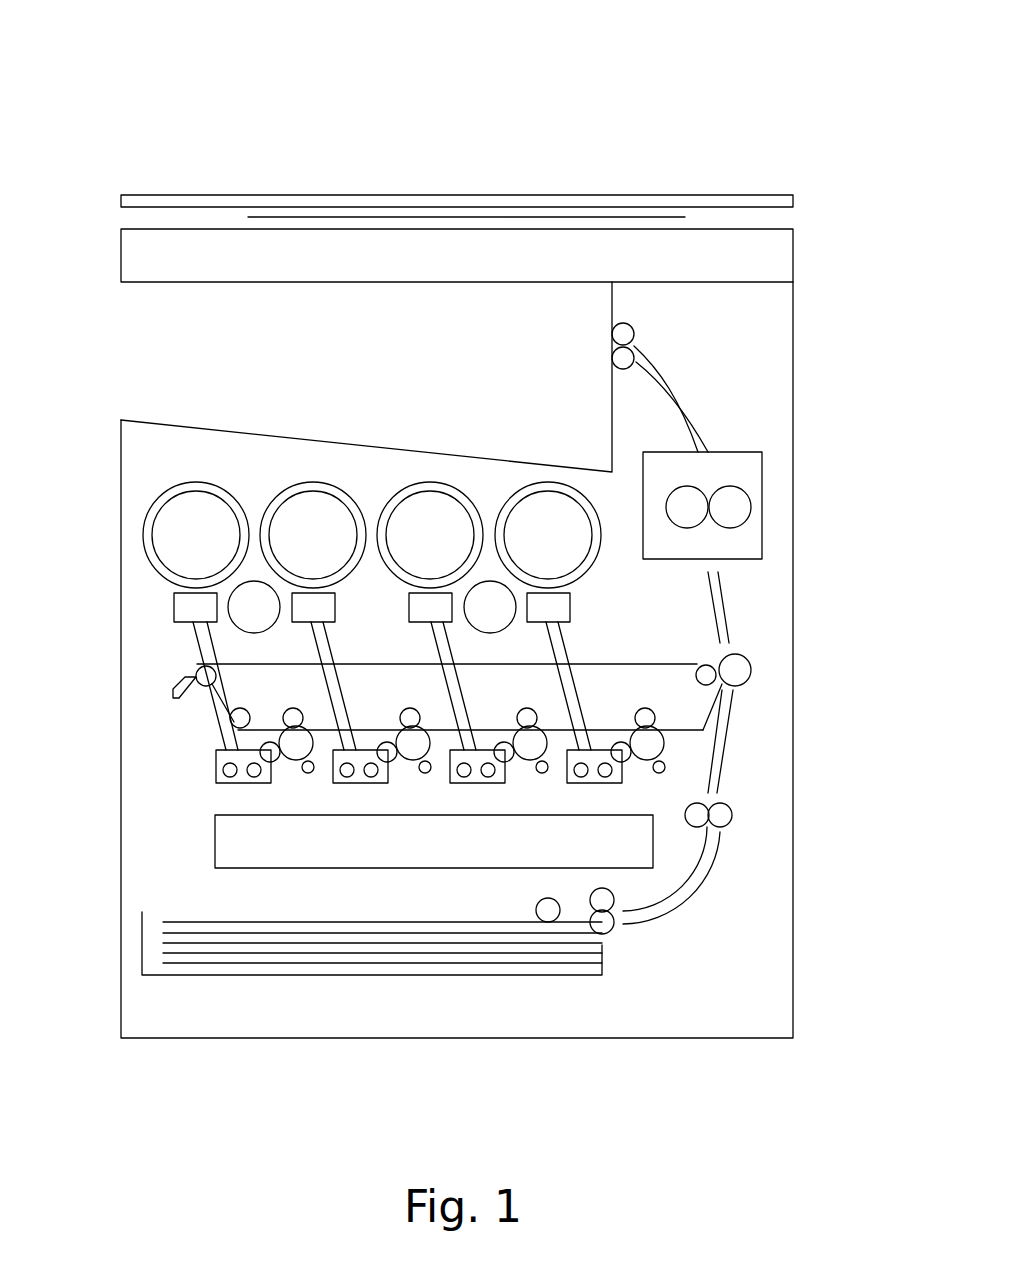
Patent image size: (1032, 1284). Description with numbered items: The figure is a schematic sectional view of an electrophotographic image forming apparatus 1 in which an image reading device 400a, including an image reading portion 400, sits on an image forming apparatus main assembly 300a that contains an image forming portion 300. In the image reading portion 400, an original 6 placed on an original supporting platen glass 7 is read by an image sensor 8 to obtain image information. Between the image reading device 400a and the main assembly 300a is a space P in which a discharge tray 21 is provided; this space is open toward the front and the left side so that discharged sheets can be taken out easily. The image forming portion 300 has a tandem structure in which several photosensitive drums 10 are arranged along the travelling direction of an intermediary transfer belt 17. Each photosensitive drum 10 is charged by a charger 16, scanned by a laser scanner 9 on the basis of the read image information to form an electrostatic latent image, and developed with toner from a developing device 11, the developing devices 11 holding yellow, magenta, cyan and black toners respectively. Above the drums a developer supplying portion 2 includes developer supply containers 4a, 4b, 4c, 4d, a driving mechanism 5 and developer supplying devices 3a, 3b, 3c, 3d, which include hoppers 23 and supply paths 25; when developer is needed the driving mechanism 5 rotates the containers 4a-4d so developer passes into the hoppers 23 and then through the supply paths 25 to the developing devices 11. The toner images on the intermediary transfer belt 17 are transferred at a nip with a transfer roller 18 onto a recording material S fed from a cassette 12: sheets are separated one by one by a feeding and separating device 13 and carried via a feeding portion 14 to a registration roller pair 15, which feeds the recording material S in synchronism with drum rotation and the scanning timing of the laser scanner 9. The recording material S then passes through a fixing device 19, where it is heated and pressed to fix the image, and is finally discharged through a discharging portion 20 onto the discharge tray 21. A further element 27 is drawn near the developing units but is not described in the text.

The image forming apparatus 1 is at (803, 118).
The image reading portion 400 is at (725, 188).
The image reading device 400a is at (800, 252).
The image sensor 8 is at (288, 255).
The original 6 is at (392, 213).
The original supporting platen glass 7 is at (483, 213).
The space P is at (172, 352).
The developer supplying portion 2 is at (145, 482).
The discharge tray 21 is at (470, 455).
The developer supply container 4a is at (193, 500).
The developer supply container 4b is at (312, 500).
The developer supply container 4c is at (430, 500).
The developer supply container 4d is at (550, 500).
The hopper 23 is at (183, 612).
The driving mechanism 5 is at (262, 620).
The developer supplying device 3a is at (172, 634).
The developer supplying device 3b is at (306, 642).
The developer supplying device 3c is at (423, 642).
The developer supplying device 3d is at (578, 636).
The supply path 25 is at (205, 651).
The discharging portion 20 is at (636, 331).
The fixing device 19 is at (763, 500).
The transfer roller 18 is at (752, 668).
The image forming portion 300 is at (755, 737).
The registration roller pair 15 is at (733, 814).
The image forming apparatus main assembly 300a is at (803, 912).
The feeding and separating device 13 is at (605, 938).
The feeding portion 14 is at (667, 913).
The developing device 11 is at (240, 785).
The photosensitive drum 10 is at (290, 762).
The laser scanner 9 is at (307, 850).
The supply roller 27 is at (388, 762).
The cassette 12 is at (410, 978).
The charger 16 is at (425, 775).
The intermediary transfer belt 17 is at (565, 730).
The recording material S is at (203, 918).